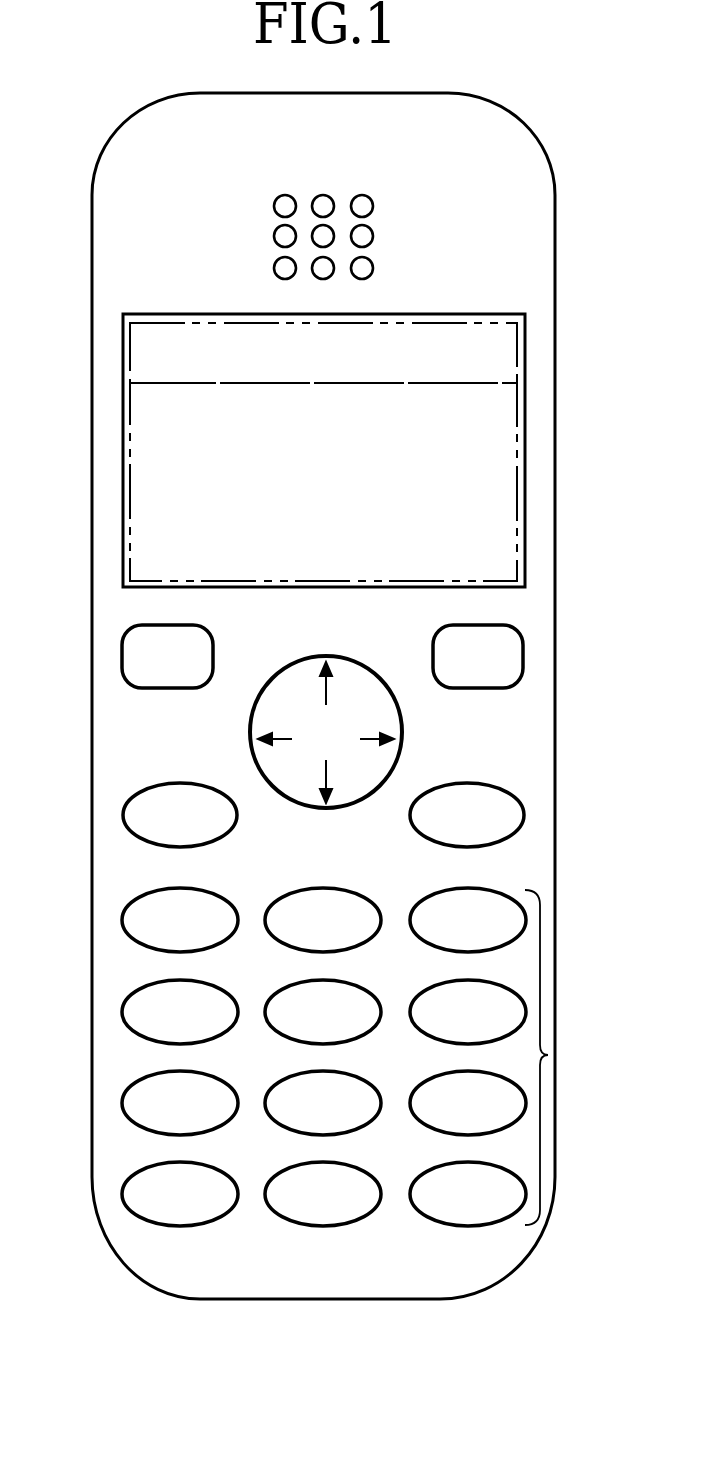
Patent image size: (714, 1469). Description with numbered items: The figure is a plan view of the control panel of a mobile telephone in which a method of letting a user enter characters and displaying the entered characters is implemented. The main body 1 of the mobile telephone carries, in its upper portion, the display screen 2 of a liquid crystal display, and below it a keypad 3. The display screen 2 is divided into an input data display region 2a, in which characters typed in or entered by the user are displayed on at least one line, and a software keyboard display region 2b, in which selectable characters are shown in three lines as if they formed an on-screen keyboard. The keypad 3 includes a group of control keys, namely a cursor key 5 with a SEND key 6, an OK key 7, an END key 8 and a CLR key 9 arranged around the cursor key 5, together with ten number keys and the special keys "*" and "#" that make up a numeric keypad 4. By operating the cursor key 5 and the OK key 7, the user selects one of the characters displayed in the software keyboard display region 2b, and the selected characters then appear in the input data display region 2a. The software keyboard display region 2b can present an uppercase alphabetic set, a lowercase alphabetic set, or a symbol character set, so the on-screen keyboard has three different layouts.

The main body 1 is at (555, 268).
The display screen 2 is at (376, 450).
The input data display region 2a is at (510, 352).
The software keyboard display region 2b is at (510, 543).
The keypad 3 is at (331, 1057).
The numeric keypad 4 is at (548, 1055).
The cursor key 5 is at (308, 807).
The SEND key 6 is at (122, 665).
The OK key 7 is at (524, 812).
The END key 8 is at (523, 652).
The CLR key 9 is at (127, 832).